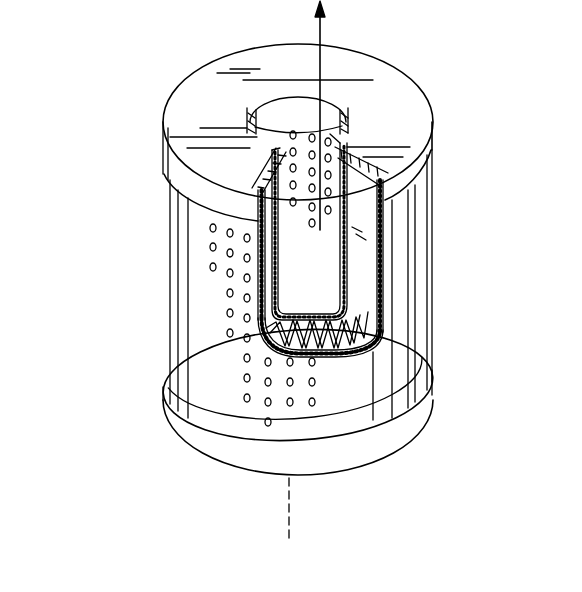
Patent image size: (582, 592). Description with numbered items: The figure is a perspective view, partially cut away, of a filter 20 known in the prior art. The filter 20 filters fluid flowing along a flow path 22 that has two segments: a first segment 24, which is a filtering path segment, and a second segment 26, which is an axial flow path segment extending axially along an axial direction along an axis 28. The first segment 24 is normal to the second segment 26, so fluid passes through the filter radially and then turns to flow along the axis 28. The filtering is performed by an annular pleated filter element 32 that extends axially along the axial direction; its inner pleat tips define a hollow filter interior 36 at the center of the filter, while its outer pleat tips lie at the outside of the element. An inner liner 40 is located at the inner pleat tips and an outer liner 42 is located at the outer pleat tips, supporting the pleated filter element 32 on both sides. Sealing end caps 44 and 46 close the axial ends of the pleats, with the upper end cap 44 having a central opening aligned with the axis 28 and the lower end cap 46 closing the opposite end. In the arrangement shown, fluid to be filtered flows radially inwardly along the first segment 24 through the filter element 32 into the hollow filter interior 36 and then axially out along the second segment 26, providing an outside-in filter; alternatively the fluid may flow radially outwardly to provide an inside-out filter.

The filter 20 is at (172, 54).
The flow path 22 is at (322, 230).
The first segment 24 is at (323, 230).
The second segment 26 is at (323, 23).
The axis 28 is at (290, 521).
The annular pleated filter element 32 is at (383, 243).
The hollow filter interior 36 is at (318, 281).
The inner liner 40 is at (347, 280).
The outer liner 42 is at (387, 320).
The sealing end cap 44 is at (415, 84).
The sealing end cap 46 is at (353, 455).